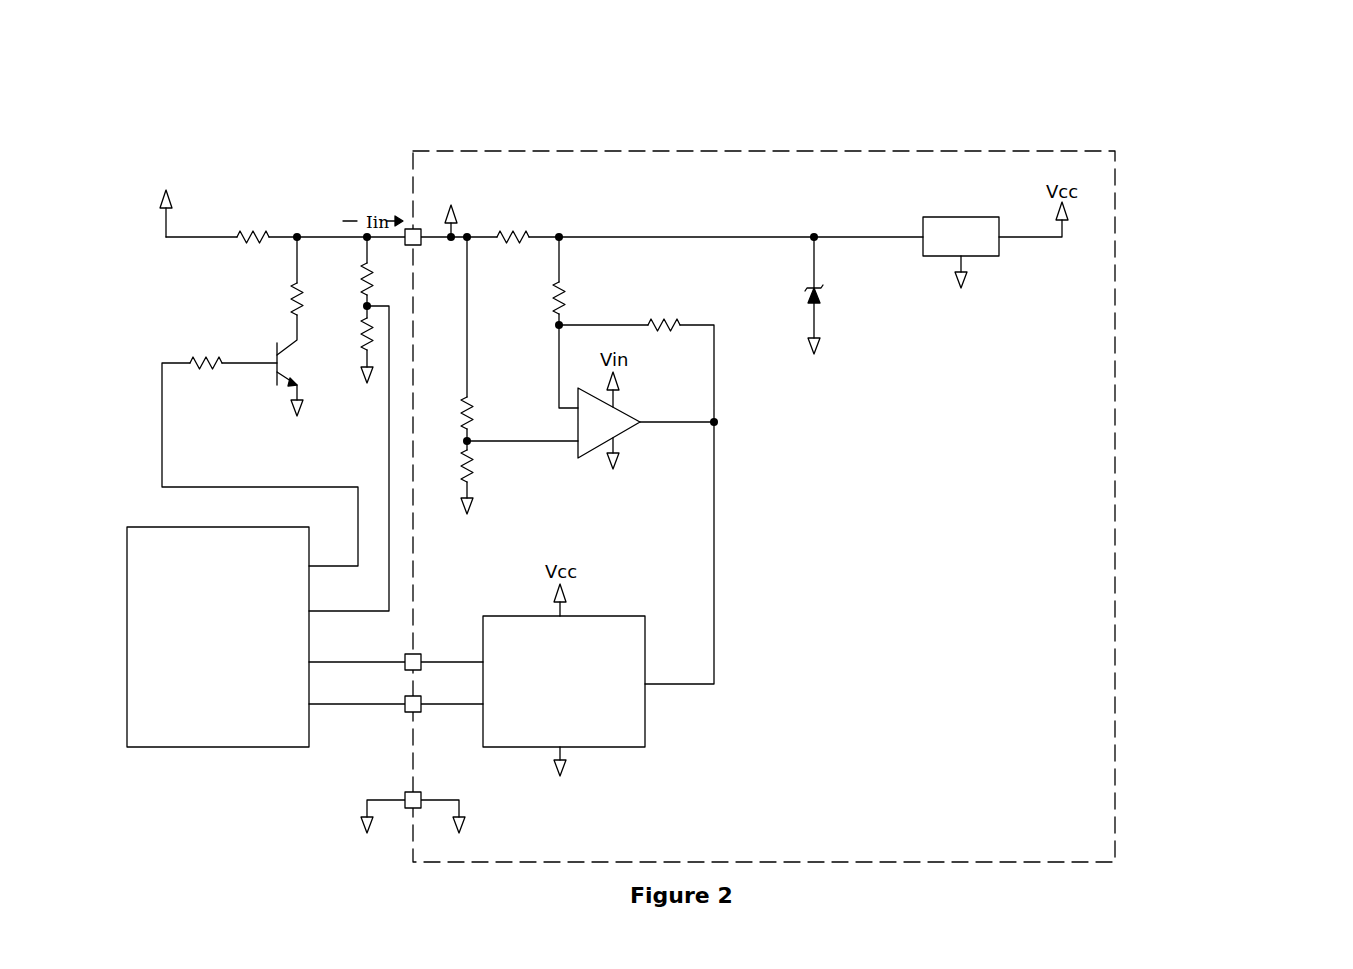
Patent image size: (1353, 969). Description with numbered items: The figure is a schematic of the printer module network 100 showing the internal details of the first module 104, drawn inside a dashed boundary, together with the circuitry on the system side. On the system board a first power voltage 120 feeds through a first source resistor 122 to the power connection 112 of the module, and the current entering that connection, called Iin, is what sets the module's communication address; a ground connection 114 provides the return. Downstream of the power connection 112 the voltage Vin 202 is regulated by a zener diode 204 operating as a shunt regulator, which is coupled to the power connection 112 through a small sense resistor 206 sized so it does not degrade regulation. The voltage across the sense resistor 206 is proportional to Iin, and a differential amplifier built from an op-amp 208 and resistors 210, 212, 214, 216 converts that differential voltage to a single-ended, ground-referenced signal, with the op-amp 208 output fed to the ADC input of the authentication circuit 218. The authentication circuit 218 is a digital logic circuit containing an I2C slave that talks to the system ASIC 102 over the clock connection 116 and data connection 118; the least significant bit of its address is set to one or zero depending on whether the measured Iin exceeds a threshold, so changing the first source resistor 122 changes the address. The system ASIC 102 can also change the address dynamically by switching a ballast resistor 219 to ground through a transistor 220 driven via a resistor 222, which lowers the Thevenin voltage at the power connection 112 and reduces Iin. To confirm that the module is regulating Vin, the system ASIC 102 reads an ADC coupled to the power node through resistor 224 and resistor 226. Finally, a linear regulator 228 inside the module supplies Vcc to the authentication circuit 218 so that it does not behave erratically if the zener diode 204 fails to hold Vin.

The printer module network 100 is at (1232, 156).
The system ASIC 102 is at (180, 748).
The first module 104 is at (950, 151).
The power connection 112 is at (411, 229).
The ground connection 114 is at (405, 793).
The clock connection 116 is at (421, 655).
The data connection 118 is at (421, 712).
The first power voltage 120 is at (168, 200).
The first source resistor 122 is at (245, 232).
The Vin 202 is at (457, 210).
The zener diode 204 is at (822, 296).
The sense resistor 206 is at (525, 232).
The op-amp 208 is at (630, 430).
The resistor 210 is at (472, 407).
The resistor 212 is at (473, 477).
The resistor 214 is at (567, 283).
The resistor 216 is at (657, 318).
The authentication circuit 218 is at (645, 715).
The ballast resistor 219 is at (295, 295).
The transistor 220 is at (278, 386).
The resistor 222 is at (198, 360).
The resistor 224 is at (364, 266).
The resistor 226 is at (364, 340).
The linear regulator 228 is at (961, 216).